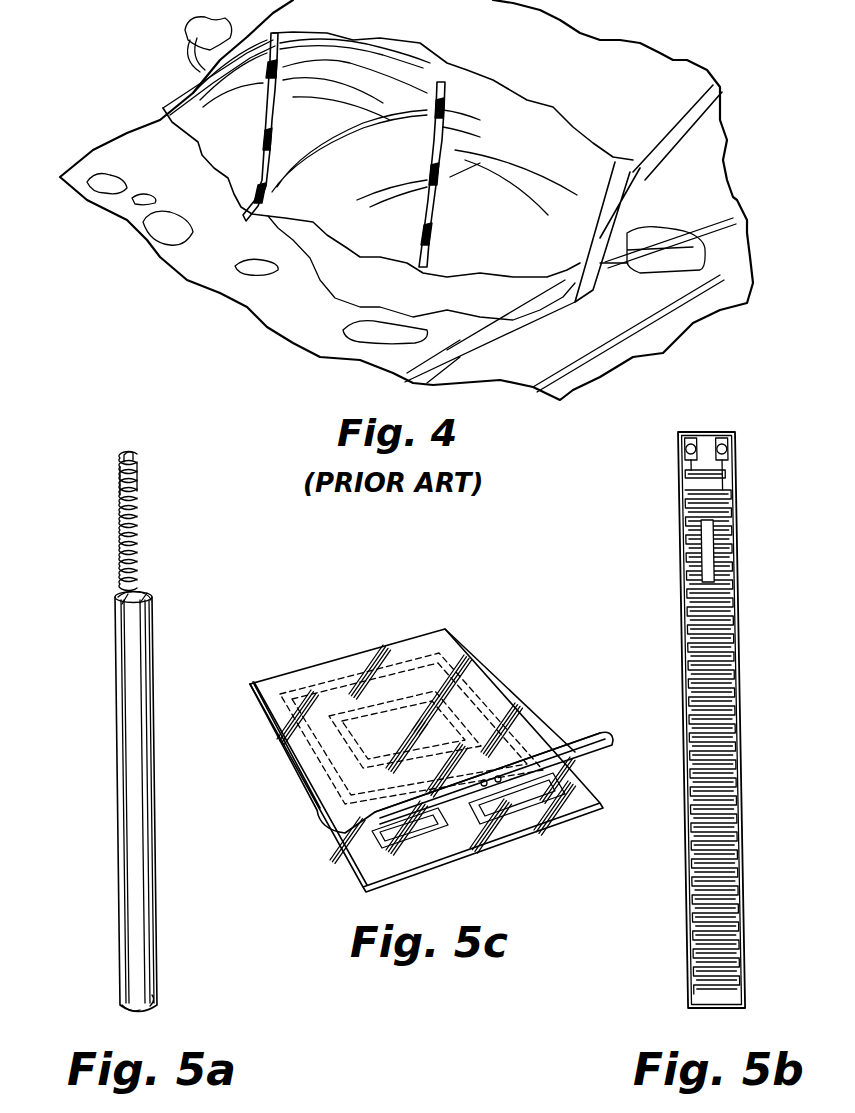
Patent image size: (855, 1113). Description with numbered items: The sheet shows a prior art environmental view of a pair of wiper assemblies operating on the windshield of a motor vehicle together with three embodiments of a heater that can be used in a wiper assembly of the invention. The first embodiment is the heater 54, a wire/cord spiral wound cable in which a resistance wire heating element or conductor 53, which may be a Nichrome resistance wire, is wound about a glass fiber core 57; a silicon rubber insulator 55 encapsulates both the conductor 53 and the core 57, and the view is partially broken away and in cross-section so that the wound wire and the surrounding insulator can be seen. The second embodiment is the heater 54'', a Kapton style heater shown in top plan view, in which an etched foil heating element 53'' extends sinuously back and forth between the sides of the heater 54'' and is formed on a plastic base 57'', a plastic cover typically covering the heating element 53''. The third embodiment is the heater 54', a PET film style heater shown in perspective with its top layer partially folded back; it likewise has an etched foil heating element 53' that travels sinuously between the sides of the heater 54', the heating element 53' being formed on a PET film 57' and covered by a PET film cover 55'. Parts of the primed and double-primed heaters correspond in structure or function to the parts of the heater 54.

In FIG. 5A, the resistance wire heating element 53 is at (91, 485).
In FIG. 5A, the heater 54 is at (112, 804).
In FIG. 5A, the silicon rubber insulator 55 is at (100, 630).
In FIG. 5A, the glass fiber core 57 is at (169, 506).
In FIG. 5C, the etched foil heating element 53' is at (439, 858).
In FIG. 5C, the heater 54' is at (425, 718).
In FIG. 5C, the PET film cover 55' is at (521, 759).
In FIG. 5C, the PET film 57' is at (427, 764).
In FIG. 5B, the etched foil heating element 53'' is at (682, 459).
In FIG. 5B, the heater 54'' is at (741, 720).
In FIG. 5B, the plastic base 57'' is at (725, 428).